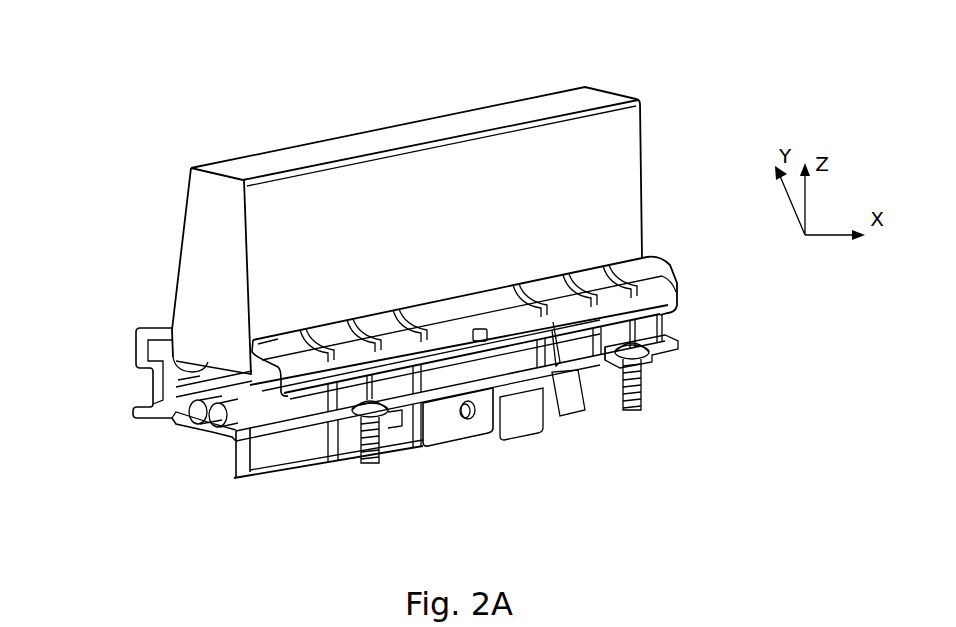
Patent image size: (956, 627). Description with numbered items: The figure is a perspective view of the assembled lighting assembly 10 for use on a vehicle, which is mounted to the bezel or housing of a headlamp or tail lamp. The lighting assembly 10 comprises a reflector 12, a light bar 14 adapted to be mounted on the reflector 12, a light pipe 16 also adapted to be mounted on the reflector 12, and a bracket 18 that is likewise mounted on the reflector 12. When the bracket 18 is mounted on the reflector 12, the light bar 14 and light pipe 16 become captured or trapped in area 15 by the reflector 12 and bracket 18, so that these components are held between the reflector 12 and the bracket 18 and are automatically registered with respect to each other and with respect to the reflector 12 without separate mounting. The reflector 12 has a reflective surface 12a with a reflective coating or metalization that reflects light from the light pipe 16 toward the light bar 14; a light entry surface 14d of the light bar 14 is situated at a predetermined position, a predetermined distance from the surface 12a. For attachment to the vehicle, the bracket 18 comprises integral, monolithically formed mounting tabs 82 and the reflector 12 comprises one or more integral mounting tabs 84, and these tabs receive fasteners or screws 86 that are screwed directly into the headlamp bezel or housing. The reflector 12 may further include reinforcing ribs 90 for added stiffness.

The lighting assembly 10 is at (265, 128).
The reflector 12 is at (133, 360).
The reflective surface 12a is at (220, 432).
The light bar 14 is at (625, 160).
The light entry surface 14d is at (171, 356).
The area 15 is at (166, 387).
The light pipe 16 is at (200, 424).
The bracket 18 is at (660, 267).
The mounting tabs 82 is at (658, 367).
The mounting tabs 84 is at (396, 420).
The screws 86 is at (362, 416).
The ribs 90 is at (510, 284).